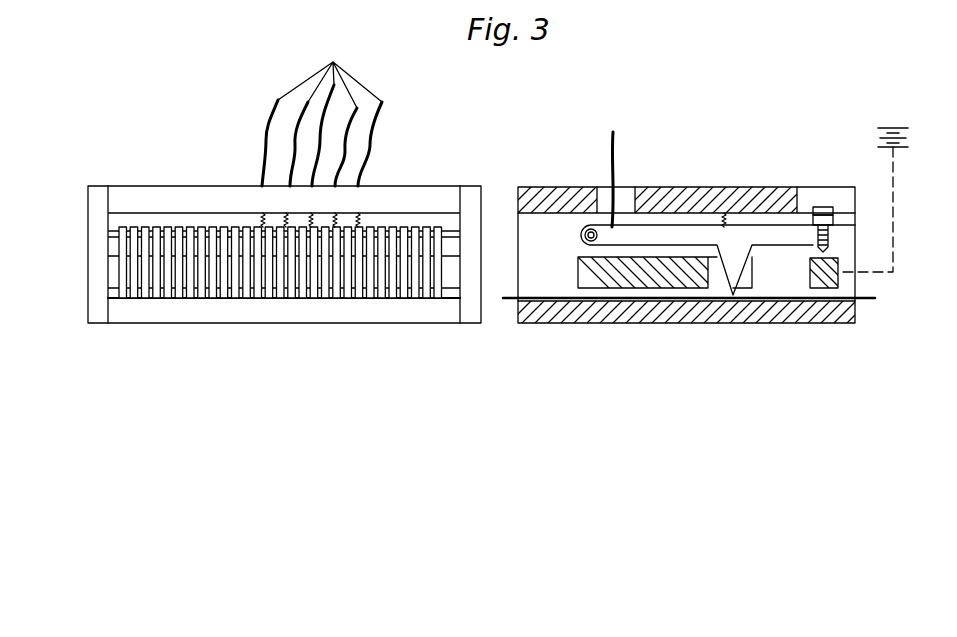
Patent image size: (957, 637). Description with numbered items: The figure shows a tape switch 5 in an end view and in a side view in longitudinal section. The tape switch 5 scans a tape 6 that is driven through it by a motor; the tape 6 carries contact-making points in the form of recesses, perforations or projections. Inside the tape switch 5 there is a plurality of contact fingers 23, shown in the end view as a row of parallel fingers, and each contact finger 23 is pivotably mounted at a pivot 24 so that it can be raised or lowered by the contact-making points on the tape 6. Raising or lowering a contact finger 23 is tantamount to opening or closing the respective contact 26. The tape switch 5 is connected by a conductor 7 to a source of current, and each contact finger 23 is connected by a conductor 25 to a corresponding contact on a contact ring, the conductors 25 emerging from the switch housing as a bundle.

The conductor 25 is at (633, 127).
The tape switch 5 is at (757, 172).
The contact finger 23 is at (697, 232).
The pivot 24 is at (584, 236).
The contact 26 is at (826, 251).
The conductor 7 is at (895, 199).
The tape 6 is at (866, 302).